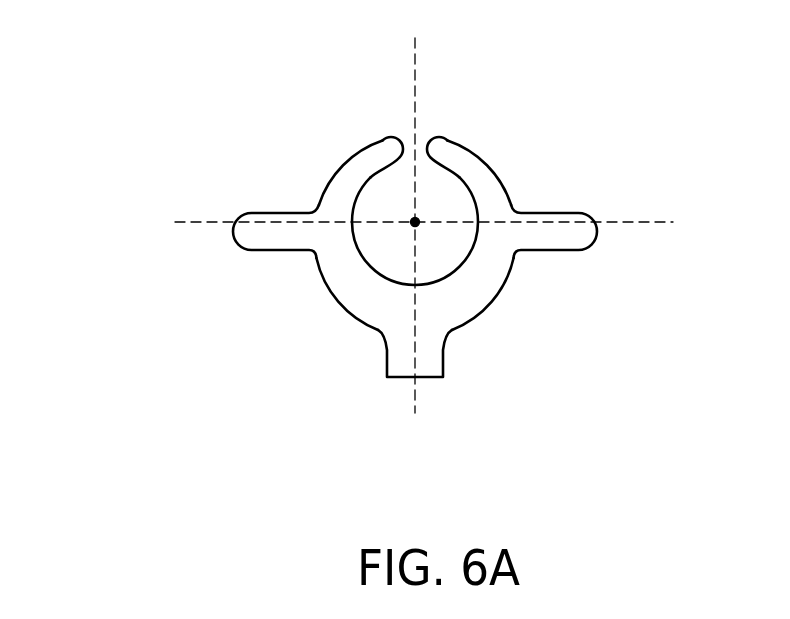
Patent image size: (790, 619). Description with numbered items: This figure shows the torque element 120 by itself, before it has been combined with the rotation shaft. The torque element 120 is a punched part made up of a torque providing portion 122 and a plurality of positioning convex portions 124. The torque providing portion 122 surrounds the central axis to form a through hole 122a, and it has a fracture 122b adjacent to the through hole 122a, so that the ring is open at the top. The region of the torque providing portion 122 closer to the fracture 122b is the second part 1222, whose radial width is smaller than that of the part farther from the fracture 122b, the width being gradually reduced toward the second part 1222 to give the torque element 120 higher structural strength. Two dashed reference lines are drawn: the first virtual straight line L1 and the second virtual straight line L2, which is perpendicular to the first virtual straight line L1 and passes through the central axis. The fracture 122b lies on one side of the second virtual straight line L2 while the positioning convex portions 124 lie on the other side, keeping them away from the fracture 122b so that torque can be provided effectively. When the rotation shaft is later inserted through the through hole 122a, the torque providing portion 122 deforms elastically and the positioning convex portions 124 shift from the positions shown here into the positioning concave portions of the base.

The torque element 120 is at (94, 46).
The torque providing portion 122 is at (463, 300).
The through hole 122a is at (366, 205).
The fracture 122b is at (424, 137).
The second part 1222 is at (340, 183).
The positioning convex portions 124 is at (252, 237).
The first virtual straight line L1 is at (412, 60).
The second virtual straight line L2 is at (618, 222).